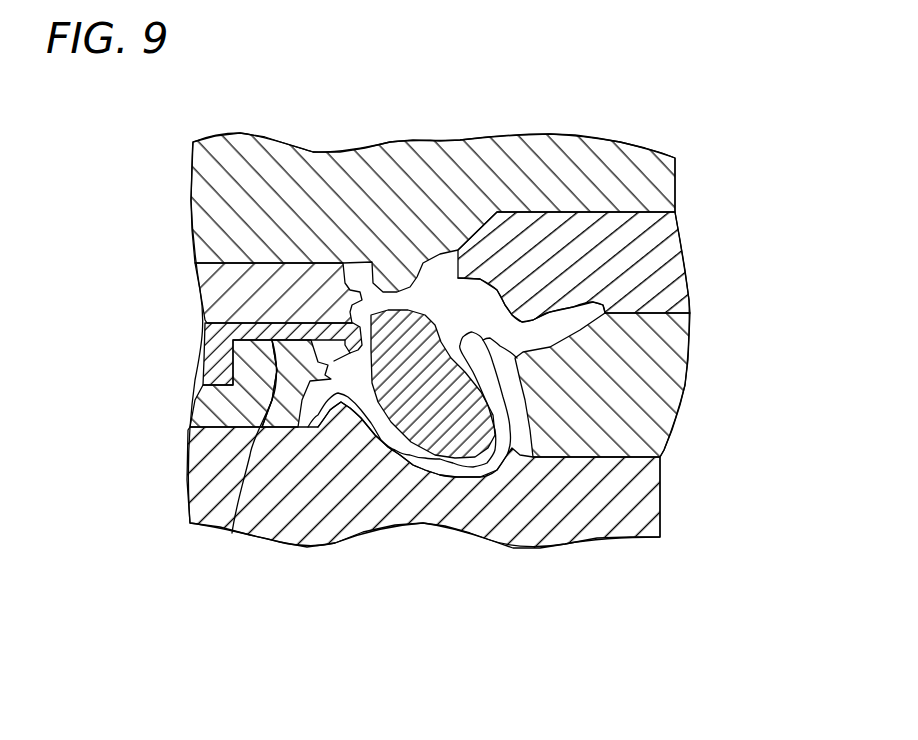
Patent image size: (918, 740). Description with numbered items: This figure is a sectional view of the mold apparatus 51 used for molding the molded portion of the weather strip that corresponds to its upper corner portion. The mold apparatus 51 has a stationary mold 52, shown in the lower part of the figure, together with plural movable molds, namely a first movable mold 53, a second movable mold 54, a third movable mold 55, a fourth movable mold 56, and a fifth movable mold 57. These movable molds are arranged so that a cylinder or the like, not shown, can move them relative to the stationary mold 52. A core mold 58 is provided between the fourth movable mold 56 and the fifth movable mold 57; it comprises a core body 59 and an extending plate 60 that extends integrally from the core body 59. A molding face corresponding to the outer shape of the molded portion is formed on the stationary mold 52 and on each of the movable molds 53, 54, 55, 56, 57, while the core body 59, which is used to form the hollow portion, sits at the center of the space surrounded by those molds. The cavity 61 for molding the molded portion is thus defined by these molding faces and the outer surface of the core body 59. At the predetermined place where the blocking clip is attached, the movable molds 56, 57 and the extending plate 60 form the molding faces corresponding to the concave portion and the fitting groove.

The mold apparatus 51 is at (680, 110).
The stationary mold 52 is at (419, 524).
The first movable mold 53 is at (670, 400).
The second movable mold 54 is at (673, 257).
The third movable mold 55 is at (416, 141).
The fourth movable mold 56 is at (204, 302).
The fifth movable mold 57 is at (203, 389).
The core mold 58 is at (209, 348).
The core body 59 is at (372, 400).
The extending plate 60 is at (232, 533).
The cavity 61 is at (470, 286).